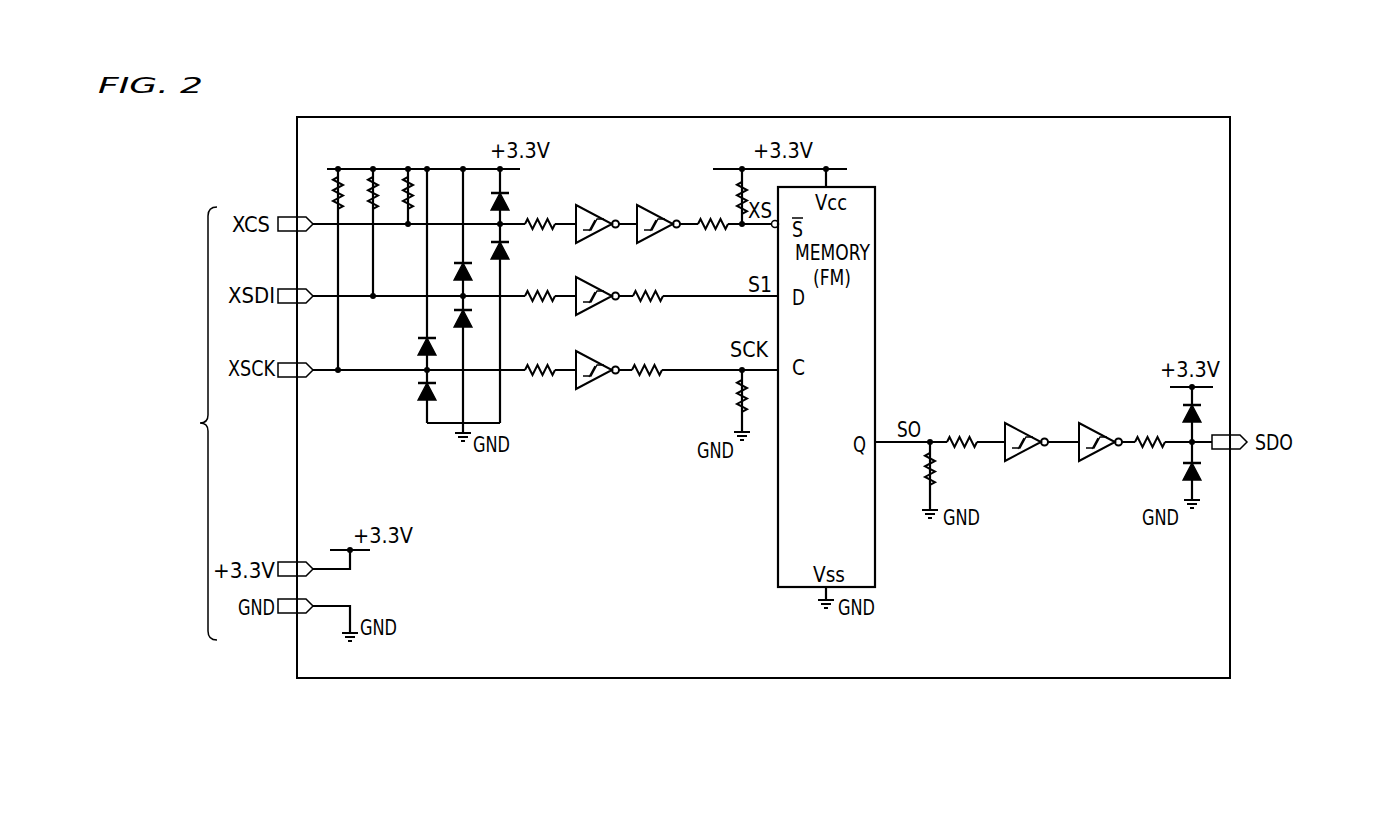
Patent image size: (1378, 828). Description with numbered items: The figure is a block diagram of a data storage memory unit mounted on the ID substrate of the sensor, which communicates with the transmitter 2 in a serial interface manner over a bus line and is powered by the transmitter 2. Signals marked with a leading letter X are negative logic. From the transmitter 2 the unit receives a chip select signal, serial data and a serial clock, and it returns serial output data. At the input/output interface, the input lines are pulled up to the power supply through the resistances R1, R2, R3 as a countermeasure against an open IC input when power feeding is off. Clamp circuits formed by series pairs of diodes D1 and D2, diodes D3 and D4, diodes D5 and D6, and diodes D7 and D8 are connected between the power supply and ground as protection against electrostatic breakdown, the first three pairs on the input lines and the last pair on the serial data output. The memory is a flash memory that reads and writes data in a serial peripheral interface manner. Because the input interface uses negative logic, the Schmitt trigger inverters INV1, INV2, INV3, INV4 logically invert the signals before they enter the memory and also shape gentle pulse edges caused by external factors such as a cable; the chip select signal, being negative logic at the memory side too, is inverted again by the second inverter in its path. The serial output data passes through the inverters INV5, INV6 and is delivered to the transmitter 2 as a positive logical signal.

The transmitter 2 is at (718, 423).
The resistance R1 is at (397, 201).
The resistance R2 is at (360, 201).
The resistance R3 is at (322, 198).
The diode D1 is at (488, 204).
The diode D2 is at (488, 250).
The diode D3 is at (452, 275).
The diode D4 is at (452, 320).
The diode D5 is at (413, 350).
The diode D6 is at (413, 396).
The diode D7 is at (1176, 418).
The diode D8 is at (1176, 476).
The inverter INV1 is at (590, 209).
The inverter INV2 is at (653, 209).
The inverter INV3 is at (590, 284).
The inverter INV4 is at (590, 357).
The inverter INV5 is at (1029, 429).
The inverter INV6 is at (1100, 429).